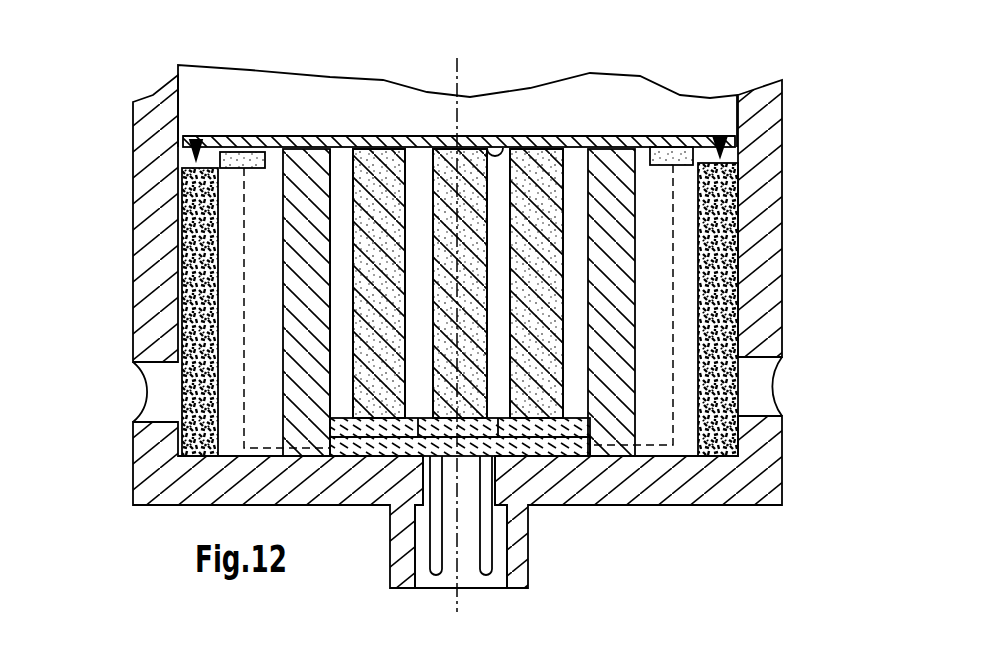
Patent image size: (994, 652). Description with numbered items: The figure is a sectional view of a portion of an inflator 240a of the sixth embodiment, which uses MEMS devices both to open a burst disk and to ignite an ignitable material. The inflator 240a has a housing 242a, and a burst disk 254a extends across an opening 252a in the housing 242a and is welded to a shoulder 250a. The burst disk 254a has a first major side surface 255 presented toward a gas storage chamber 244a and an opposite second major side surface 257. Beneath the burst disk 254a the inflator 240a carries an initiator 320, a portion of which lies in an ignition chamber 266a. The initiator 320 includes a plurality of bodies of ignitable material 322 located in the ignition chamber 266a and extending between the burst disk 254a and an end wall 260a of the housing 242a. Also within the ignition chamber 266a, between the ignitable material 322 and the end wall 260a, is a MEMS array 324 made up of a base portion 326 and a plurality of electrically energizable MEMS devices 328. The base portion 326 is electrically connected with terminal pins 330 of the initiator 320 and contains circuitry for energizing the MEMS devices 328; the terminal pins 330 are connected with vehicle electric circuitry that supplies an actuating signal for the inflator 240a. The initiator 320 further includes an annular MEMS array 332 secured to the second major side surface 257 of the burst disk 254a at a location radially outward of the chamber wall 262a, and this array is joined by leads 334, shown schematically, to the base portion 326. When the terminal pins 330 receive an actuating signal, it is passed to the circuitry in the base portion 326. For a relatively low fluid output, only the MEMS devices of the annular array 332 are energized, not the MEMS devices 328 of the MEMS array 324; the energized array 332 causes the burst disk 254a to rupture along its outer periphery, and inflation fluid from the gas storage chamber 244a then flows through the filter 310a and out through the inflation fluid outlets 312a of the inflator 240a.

The inflator 240a is at (145, 522).
The housing 242a is at (135, 492).
The gas storage chamber 244a is at (668, 100).
The shoulder 250a is at (192, 158).
The opening 252a is at (216, 180).
The burst disk 254a is at (337, 137).
The first major side surface 255 is at (573, 136).
The second major side surface 257 is at (496, 148).
The end wall 260a is at (706, 478).
The chamber wall 262a is at (300, 280).
The ignition chamber 266a is at (340, 232).
The filter 310a is at (735, 328).
The inflation fluid outlets 312a is at (755, 387).
The initiator 320 is at (355, 458).
The bodies of ignitable material 322 is at (452, 158).
The MEMS array 324 is at (538, 483).
The base portion 326 is at (572, 450).
The electrically energizable MEMS devices 328 is at (352, 420).
The terminal pins 330 is at (478, 567).
The annular MEMS array 332 is at (248, 158).
The leads 334 is at (162, 303).